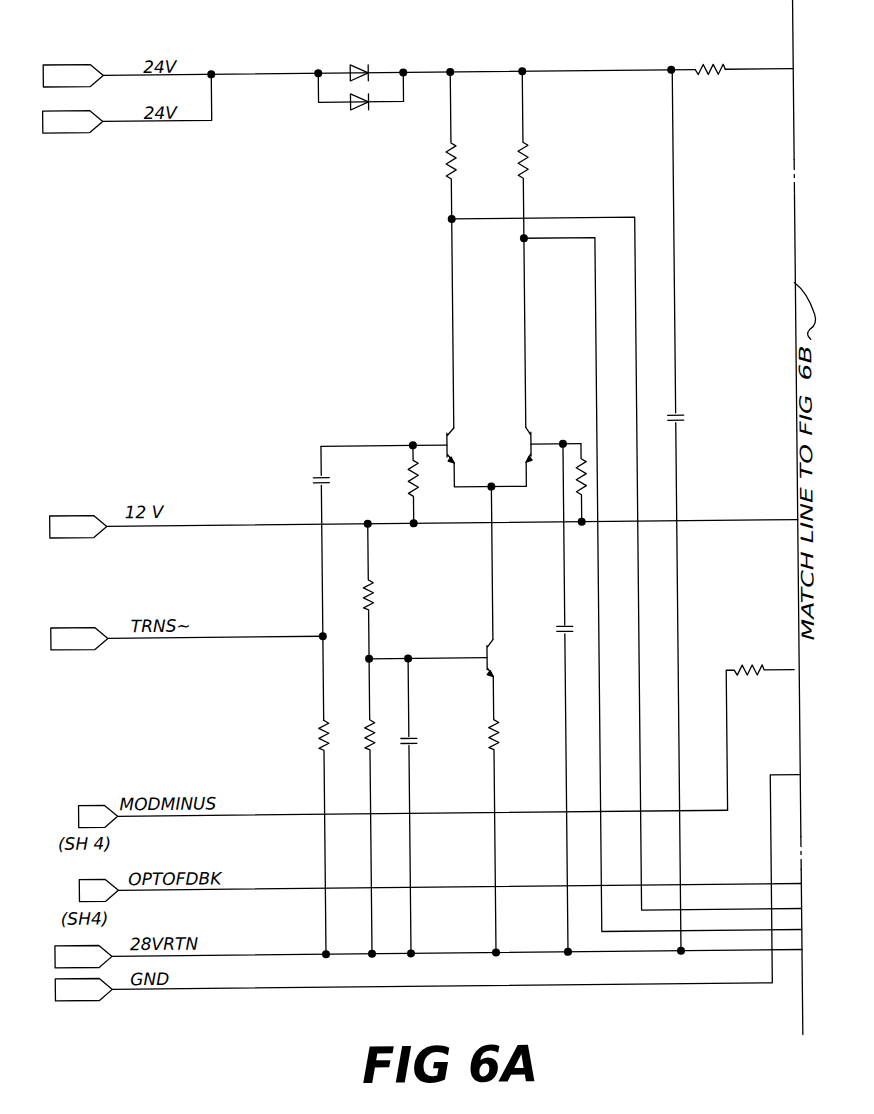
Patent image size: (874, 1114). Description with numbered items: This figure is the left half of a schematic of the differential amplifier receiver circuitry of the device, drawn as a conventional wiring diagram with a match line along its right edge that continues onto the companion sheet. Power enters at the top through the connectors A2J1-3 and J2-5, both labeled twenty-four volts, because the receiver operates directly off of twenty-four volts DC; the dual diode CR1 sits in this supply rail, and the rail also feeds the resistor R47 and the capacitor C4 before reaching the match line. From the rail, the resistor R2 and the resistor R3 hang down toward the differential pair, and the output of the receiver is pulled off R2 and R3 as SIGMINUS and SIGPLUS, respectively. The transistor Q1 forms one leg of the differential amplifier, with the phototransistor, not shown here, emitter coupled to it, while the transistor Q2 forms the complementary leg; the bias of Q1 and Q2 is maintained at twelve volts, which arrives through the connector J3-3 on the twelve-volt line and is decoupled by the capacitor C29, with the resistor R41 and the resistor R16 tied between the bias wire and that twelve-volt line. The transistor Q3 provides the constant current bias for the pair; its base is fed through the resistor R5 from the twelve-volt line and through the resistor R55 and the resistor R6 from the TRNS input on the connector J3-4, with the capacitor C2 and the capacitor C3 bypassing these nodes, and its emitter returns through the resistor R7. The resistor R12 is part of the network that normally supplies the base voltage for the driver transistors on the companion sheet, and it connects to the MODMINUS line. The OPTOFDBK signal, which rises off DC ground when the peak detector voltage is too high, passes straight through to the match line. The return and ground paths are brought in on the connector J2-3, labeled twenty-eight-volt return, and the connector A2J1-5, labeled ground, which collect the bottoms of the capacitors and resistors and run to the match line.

The dual diode BAW56 CR1 is at (361, 60).
The resistor R2 is at (463, 145).
The resistor R3 is at (536, 154).
The resistor 10 ohm 1W 5% R47 is at (713, 82).
The capacitor 15uF 25V C4 is at (702, 512).
The transistor Q2 is at (467, 425).
The transistor Q1 is at (510, 446).
The capacitor 0.01uF 50V C29 is at (270, 583).
The resistor 1K R41 is at (400, 486).
The resistor 1K R16 is at (560, 485).
The resistor 220 R5 is at (353, 592).
The transistor Q3 is at (517, 660).
The resistor 1K R7 is at (463, 816).
The capacitor 0.1uF 50V C2 is at (420, 808).
The resistor 100 R55 is at (309, 832).
The resistor 330 R6 is at (356, 808).
The capacitor 0.1uF 50V C3 is at (534, 700).
The resistor R12 is at (761, 710).
The connector A2J1 pin 3 (24V) A2J1-3 is at (73, 66).
The connector J2 pin 5 (24V) J2-5 is at (73, 122).
The connector J3 pin 3 (12V) J3-3 is at (78, 527).
The connector J3 pin 4 (TRNS) J3-4 is at (79, 639).
The connector J2 pin 3 (28VRTN) J2-3 is at (83, 957).
The connector A2J1 pin 5 (GND) A2J1-5 is at (87, 1003).